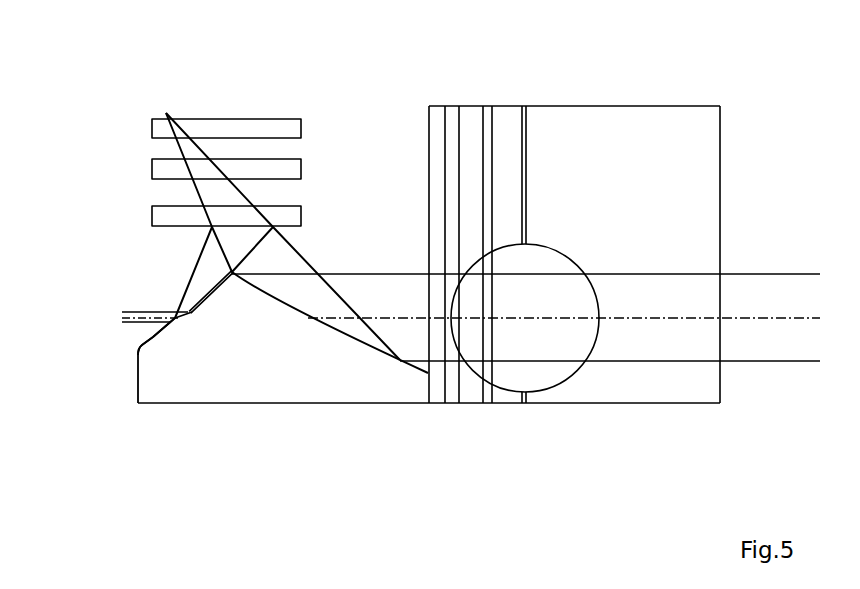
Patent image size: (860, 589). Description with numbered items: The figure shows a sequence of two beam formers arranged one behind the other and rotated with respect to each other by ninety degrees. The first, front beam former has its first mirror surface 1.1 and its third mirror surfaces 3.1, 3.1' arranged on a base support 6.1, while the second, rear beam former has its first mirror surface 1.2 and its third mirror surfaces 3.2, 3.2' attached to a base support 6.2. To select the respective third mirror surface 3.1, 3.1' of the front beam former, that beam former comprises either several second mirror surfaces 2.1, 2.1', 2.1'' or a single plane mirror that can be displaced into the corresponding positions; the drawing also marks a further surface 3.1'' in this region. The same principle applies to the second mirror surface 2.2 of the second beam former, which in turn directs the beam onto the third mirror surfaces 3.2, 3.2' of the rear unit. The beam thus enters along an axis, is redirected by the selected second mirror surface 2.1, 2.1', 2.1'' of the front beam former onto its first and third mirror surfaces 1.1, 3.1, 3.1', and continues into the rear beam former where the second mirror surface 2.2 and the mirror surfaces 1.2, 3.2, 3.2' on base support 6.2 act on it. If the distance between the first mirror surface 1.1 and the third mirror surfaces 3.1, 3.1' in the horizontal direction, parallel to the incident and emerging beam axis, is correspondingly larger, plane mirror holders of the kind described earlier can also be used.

The first mirror surface 1.1 is at (355, 342).
The first mirror surface 1.2 is at (703, 190).
The second mirror surface 2.1 is at (166, 206).
The second mirror surface 2.1' is at (166, 155).
The second mirror surface 2.1'' is at (166, 107).
The second mirror surface 2.2 is at (548, 378).
The third mirror surface 3.1 is at (109, 308).
The third mirror surface 3.1' is at (103, 343).
The reflecting surface 3.1'' is at (92, 381).
The third mirror surface 3.2 is at (500, 214).
The third mirror surface 3.2' is at (433, 214).
The base support 6.1 is at (243, 385).
The base support 6.2 is at (637, 105).